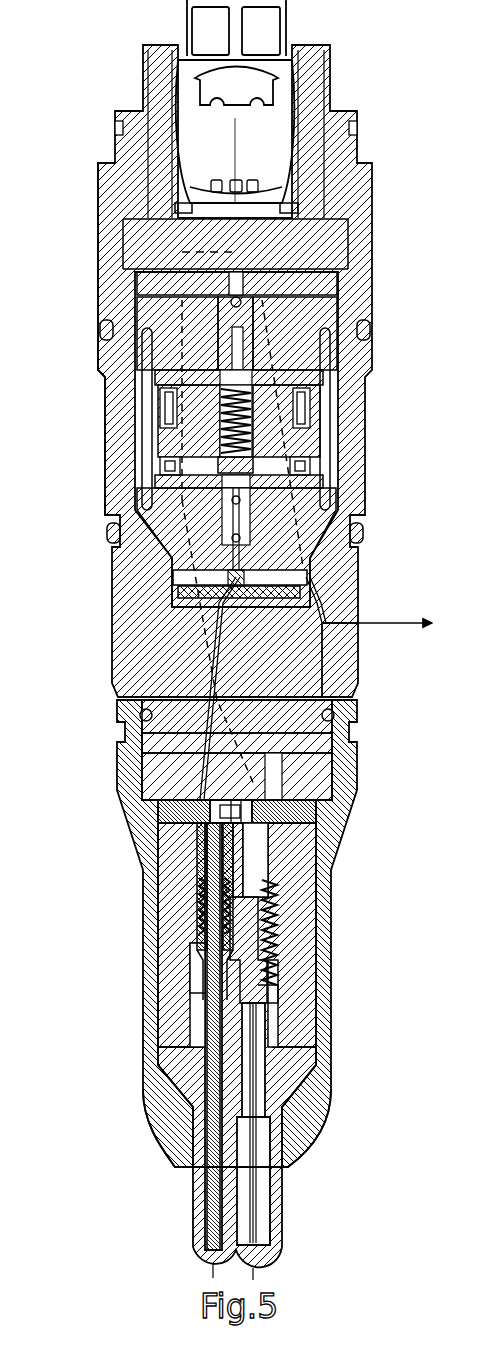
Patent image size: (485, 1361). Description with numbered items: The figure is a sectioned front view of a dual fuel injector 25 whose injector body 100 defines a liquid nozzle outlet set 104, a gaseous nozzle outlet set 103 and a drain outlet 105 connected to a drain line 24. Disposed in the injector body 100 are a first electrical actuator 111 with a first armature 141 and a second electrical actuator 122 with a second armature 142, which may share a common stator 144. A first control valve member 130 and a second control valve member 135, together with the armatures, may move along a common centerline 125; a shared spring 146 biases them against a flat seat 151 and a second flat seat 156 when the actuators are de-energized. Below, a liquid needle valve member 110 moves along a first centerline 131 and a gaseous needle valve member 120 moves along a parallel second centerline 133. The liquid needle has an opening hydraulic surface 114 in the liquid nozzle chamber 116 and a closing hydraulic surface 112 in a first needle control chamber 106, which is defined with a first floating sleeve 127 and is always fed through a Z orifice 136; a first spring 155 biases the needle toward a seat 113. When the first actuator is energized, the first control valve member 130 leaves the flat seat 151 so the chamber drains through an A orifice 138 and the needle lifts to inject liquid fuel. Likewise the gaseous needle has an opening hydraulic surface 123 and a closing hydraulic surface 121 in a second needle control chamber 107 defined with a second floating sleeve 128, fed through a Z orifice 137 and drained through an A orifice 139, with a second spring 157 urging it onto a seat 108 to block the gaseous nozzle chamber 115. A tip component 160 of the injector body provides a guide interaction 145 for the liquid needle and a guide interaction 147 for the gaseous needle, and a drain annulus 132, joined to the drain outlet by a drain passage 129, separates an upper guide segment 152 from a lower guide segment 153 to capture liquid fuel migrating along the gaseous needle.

The drain line 24 is at (398, 624).
The fuel injector 25 is at (373, 530).
The injector body 100 is at (112, 620).
The gaseous nozzle outlet set 103 is at (262, 1264).
The liquid nozzle outlet set 104 is at (207, 1262).
The drain outlet 105 is at (358, 623).
The first needle control chamber 106 is at (160, 832).
The second needle control chamber 107 is at (316, 848).
The seat 108 is at (262, 1245).
The liquid needle valve member 110 is at (200, 1028).
The first electrical actuator 111 is at (122, 474).
The closing hydraulic surface 112 is at (142, 800).
The seat 113 is at (207, 1250).
The opening hydraulic surface 114 is at (203, 953).
The gaseous nozzle chamber 115 is at (280, 1158).
The liquid nozzle chamber 116 is at (200, 988).
The gaseous needle valve member 120 is at (268, 1000).
The closing hydraulic surface 121 is at (262, 820).
The second electrical actuator 122 is at (146, 403).
The opening hydraulic surface 123 is at (277, 930).
The common centerline 125 is at (241, 130).
The first floating sleeve 127 is at (200, 868).
The second floating sleeve 128 is at (277, 868).
The drain passage 129 is at (322, 672).
The first control valve member 130 is at (190, 572).
The first centerline 131 is at (190, 1085).
The drain annulus 132 is at (290, 1130).
The second centerline 133 is at (270, 1033).
The second control valve member 135 is at (241, 298).
The Z orifice 136 is at (215, 800).
The Z orifice 137 is at (237, 800).
The A orifice 138 is at (212, 802).
The A orifice 139 is at (317, 792).
The first armature 141 is at (297, 493).
The second armature 142 is at (252, 410).
The common stator 144 is at (160, 442).
The guide interaction 145 is at (190, 1110).
The shared spring 146 is at (293, 433).
The guide interaction 147 is at (268, 1068).
The flat seat 151 is at (305, 572).
The upper guide segment 152 is at (272, 1090).
The lower guide segment 153 is at (270, 1160).
The first spring 155 is at (202, 920).
The second flat seat 156 is at (150, 300).
The second spring 157 is at (278, 955).
The tip component 160 is at (200, 1103).